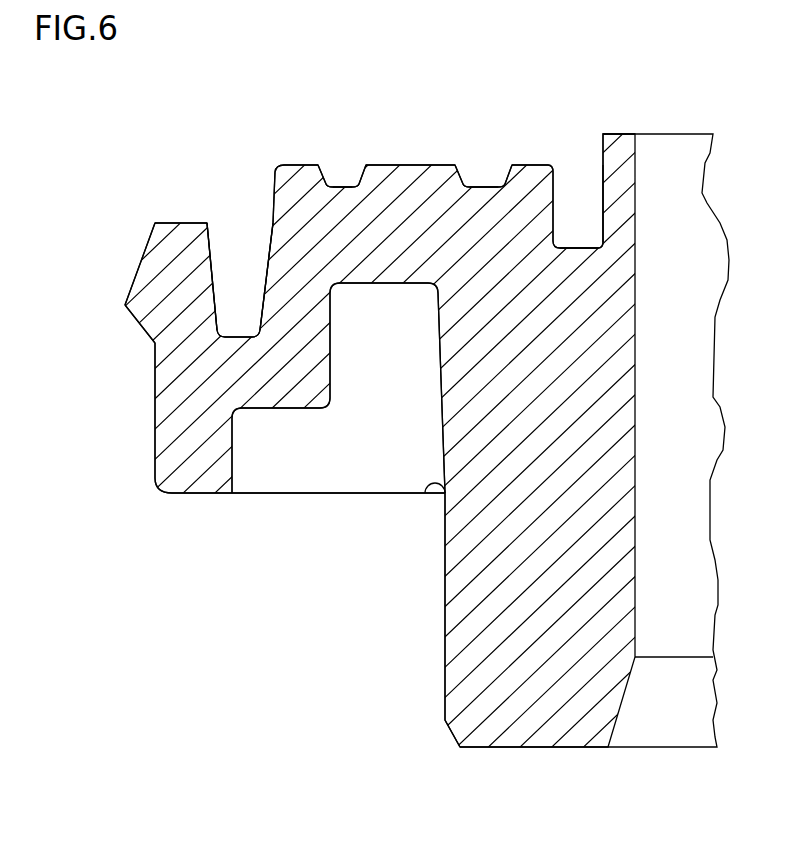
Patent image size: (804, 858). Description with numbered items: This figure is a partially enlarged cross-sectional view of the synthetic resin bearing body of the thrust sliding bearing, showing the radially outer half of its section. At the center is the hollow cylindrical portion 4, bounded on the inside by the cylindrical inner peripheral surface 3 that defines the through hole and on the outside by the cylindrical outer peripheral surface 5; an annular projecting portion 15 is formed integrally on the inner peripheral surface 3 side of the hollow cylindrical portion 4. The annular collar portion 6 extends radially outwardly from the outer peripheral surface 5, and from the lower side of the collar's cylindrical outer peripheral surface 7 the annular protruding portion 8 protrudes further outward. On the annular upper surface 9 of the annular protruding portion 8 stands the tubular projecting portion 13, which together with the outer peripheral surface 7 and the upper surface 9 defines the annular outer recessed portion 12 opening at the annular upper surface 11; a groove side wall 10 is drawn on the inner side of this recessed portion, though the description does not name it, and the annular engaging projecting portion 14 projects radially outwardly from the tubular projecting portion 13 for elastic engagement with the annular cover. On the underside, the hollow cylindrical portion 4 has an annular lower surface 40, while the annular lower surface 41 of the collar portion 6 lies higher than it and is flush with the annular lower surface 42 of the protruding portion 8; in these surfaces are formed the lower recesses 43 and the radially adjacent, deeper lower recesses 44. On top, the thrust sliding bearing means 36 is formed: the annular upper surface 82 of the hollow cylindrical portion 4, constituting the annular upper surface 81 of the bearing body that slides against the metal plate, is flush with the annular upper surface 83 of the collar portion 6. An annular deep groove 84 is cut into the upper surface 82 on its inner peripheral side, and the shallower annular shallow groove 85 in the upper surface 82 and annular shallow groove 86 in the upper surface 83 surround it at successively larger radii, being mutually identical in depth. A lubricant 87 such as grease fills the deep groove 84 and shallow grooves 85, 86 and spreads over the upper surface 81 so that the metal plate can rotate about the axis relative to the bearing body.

The cylindrical inner peripheral surface 3 is at (635, 193).
The hollow cylindrical portion 4 is at (530, 693).
The cylindrical outer peripheral surface 5 is at (445, 683).
The annular collar portion 6 is at (295, 400).
The cylindrical outer peripheral surface 7 is at (272, 203).
The annular protruding portion 8 is at (168, 442).
The annular upper surface 9 is at (237, 330).
The groove side wall 10 is at (213, 277).
The annular upper surface 11 is at (167, 223).
The annular outer recessed portion 12 is at (252, 250).
The tubular projecting portion 13 is at (180, 278).
The annular engaging projecting portion 14 is at (132, 305).
The annular projecting portion 15 is at (622, 138).
The thrust sliding bearing means 36 is at (405, 163).
The annular lower surface 40 is at (575, 750).
The annular lower surface 41 is at (338, 495).
The annular lower surface 42 is at (198, 497).
The lower recess 43 is at (250, 457).
The lower recess 44 is at (388, 370).
The annular upper surface 81 is at (528, 165).
The annular upper surface 82 is at (590, 183).
The annular upper surface 83 is at (297, 160).
The annular deep groove 84 is at (592, 183).
The annular shallow groove 85 is at (470, 178).
The annular shallow groove 86 is at (338, 177).
The lubricant 87 is at (358, 180).